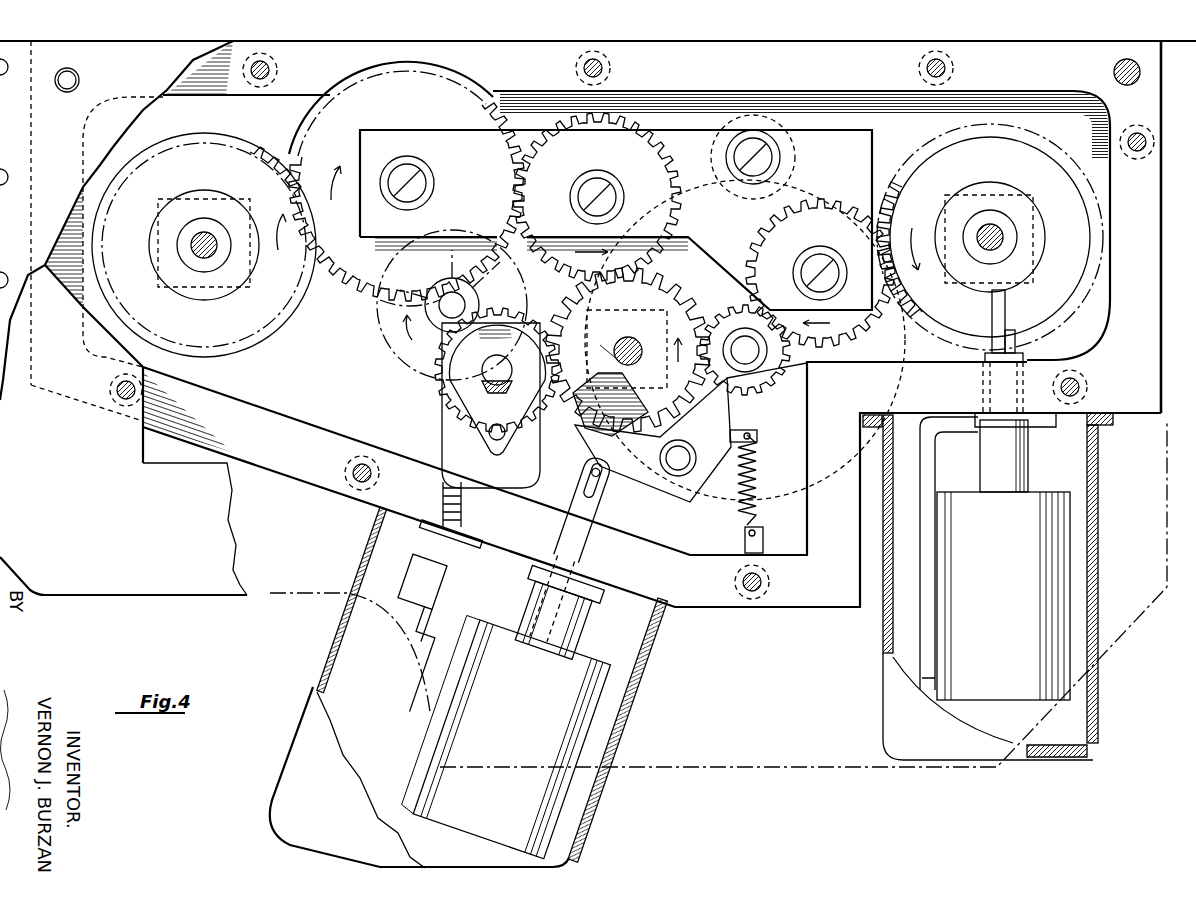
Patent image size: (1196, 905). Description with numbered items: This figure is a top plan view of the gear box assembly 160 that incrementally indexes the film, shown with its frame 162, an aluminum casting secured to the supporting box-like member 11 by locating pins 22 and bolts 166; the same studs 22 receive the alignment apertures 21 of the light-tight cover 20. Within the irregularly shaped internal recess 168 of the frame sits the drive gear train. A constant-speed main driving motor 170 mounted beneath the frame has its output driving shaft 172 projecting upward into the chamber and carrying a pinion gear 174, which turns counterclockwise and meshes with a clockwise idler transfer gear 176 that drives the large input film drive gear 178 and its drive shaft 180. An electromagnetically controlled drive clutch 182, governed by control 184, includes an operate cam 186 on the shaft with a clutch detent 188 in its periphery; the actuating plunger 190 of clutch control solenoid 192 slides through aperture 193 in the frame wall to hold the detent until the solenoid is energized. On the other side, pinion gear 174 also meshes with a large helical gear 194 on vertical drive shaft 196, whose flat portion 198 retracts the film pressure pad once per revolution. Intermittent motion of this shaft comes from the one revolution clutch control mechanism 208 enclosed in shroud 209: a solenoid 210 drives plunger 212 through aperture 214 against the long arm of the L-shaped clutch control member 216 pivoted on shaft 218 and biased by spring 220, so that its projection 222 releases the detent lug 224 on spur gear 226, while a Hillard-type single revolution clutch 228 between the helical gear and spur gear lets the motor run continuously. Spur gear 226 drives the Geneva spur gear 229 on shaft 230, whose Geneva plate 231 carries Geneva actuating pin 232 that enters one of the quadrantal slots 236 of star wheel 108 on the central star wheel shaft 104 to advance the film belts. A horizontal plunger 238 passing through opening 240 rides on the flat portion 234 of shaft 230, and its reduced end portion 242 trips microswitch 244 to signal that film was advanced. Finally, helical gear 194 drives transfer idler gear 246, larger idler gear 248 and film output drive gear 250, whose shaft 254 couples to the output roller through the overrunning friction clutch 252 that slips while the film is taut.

The box-like member 11 is at (94, 515).
The cover 20 is at (65, 193).
The alignment aperture 21 is at (67, 92).
The aligning stud 22 is at (79, 78).
The central star wheel shaft 104 is at (443, 297).
The star wheel 108 is at (398, 325).
The gear box assembly 160 is at (822, 610).
The frame 162 is at (1140, 405).
The bolt 166 is at (603, 68).
The internal recess 168 is at (855, 90).
The main driving motor 170 is at (838, 482).
The output driving shaft 172 is at (746, 362).
The pinion gear 174 is at (770, 372).
The idler transfer gear 176 is at (880, 335).
The input film drive gear 178 is at (890, 185).
The drive shaft 180 is at (997, 237).
The drive clutch 182 is at (1041, 284).
The control 184 is at (1070, 462).
The operate cam 186 is at (1046, 244).
The clutch detent 188 is at (992, 300).
The actuating plunger 190 is at (1012, 335).
The clutch control solenoid 192 is at (1010, 560).
The aperture 193 is at (987, 391).
The helical gear 194 is at (567, 300).
The drive shaft 196 is at (641, 362).
The flat portion 198 is at (622, 341).
The one revolution clutch control mechanism 208 is at (598, 818).
The shroud 209 is at (636, 713).
The solenoid 210 is at (508, 748).
The plunger 212 is at (602, 510).
The aperture 214 is at (592, 552).
The L-shaped clutch control member 216 is at (702, 503).
The shaft 218 is at (677, 472).
The spring 220 is at (760, 465).
The projection 222 is at (588, 420).
The detent lug 224 is at (594, 466).
The spur gear 226 is at (690, 302).
The single revolution clutch 228 is at (665, 290).
The Geneva spur gear 229 is at (489, 390).
The shaft 230 is at (482, 373).
The Geneva plate 231 is at (440, 362).
The Geneva actuating pin 232 is at (500, 452).
The flat portion 234 is at (489, 432).
The quadrantal slot 236 is at (385, 303).
The plunger 238 is at (442, 470).
The opening 240 is at (463, 515).
The reduced end portion 242 is at (430, 537).
The microswitch 244 is at (430, 605).
The transfer idler gear 246 is at (640, 120).
The idler gear 248 is at (490, 98).
The film output drive gear 250 is at (267, 150).
The overrunning friction clutch 252 is at (240, 290).
The shaft 254 is at (195, 270).